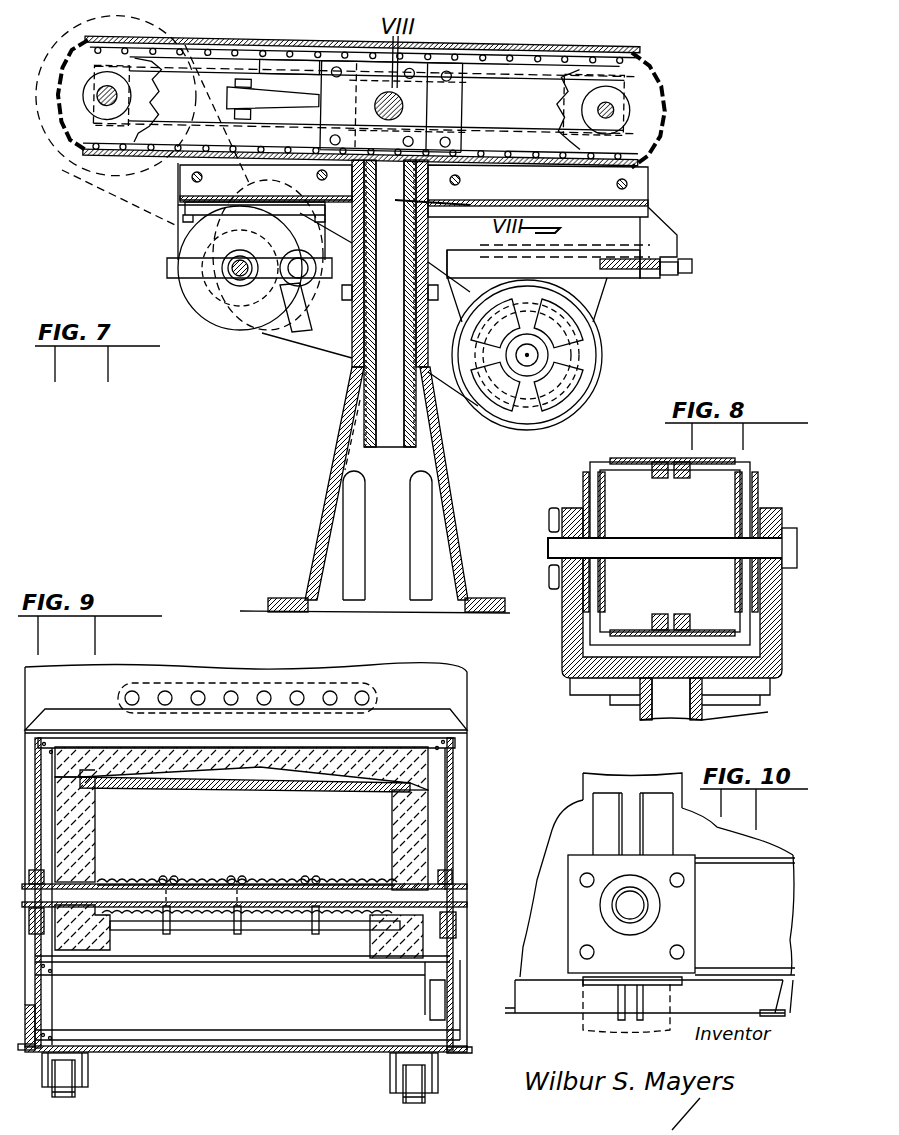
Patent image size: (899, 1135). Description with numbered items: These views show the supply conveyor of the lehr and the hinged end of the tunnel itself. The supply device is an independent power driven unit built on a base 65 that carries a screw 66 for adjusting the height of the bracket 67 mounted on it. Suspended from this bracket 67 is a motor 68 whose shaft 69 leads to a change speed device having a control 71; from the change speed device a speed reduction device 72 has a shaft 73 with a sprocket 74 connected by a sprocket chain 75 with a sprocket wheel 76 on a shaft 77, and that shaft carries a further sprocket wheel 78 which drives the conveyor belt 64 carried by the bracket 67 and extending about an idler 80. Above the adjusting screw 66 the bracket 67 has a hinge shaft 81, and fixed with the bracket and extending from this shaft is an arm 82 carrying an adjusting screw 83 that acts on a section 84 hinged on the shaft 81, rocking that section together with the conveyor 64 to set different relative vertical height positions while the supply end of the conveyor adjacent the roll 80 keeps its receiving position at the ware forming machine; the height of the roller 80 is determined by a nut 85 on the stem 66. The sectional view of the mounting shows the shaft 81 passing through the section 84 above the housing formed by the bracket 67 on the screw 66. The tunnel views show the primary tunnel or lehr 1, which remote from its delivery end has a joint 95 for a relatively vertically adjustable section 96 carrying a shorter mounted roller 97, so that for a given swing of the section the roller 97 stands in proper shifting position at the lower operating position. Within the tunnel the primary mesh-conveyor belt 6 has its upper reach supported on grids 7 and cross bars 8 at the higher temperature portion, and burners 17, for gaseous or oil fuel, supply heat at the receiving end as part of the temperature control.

In FIG. 10, the primary tunnel 1 is at (566, 832).
In FIG. 9, the primary mesh-conveyor belt 6 is at (279, 882).
In FIG. 9, the grids 7 is at (237, 878).
In FIG. 9, the cross bars 8 is at (146, 912).
In FIG. 9, the burners 17 is at (232, 700).
In FIG. 7, the conveyor belt 64 is at (540, 42).
In FIG. 8, the conveyor belt 64 is at (722, 458).
In FIG. 7, the base 65 is at (335, 451).
In FIG. 7, the screw 66 is at (418, 437).
In FIG. 8, the screw 66 is at (632, 702).
In FIG. 7, the bracket 67 is at (428, 188).
In FIG. 8, the bracket 67 is at (560, 648).
In FIG. 7, the motor 68 is at (598, 343).
In FIG. 7, the shaft 69 is at (530, 355).
In FIG. 7, the control 71 is at (693, 265).
In FIG. 7, the speed reduction device 72 is at (215, 322).
In FIG. 7, the shaft 73 is at (215, 283).
In FIG. 7, the sprocket 74 is at (275, 286).
In FIG. 7, the sprocket chain 75 is at (140, 232).
In FIG. 7, the sprocket wheel 76 is at (170, 135).
In FIG. 7, the shaft 77 is at (108, 95).
In FIG. 7, the sprocket wheel 78 is at (157, 100).
In FIG. 7, the idler 80 is at (557, 100).
In FIG. 7, the hinge shaft 81 is at (395, 107).
In FIG. 8, the hinge shaft 81 is at (668, 540).
In FIG. 7, the arm 82 is at (273, 99).
In FIG. 7, the adjusting screw 83 is at (248, 116).
In FIG. 7, the section 84 is at (276, 54).
In FIG. 8, the section 84 is at (690, 474).
In FIG. 7, the nut 85 is at (355, 300).
In FIG. 9, the joint 95 is at (462, 892).
In FIG. 10, the joint 95 is at (650, 912).
In FIG. 9, the relatively vertically adjustable section 96 is at (467, 765).
In FIG. 10, the relatively vertically adjustable section 96 is at (740, 847).
In FIG. 9, the roller 97 is at (70, 1098).